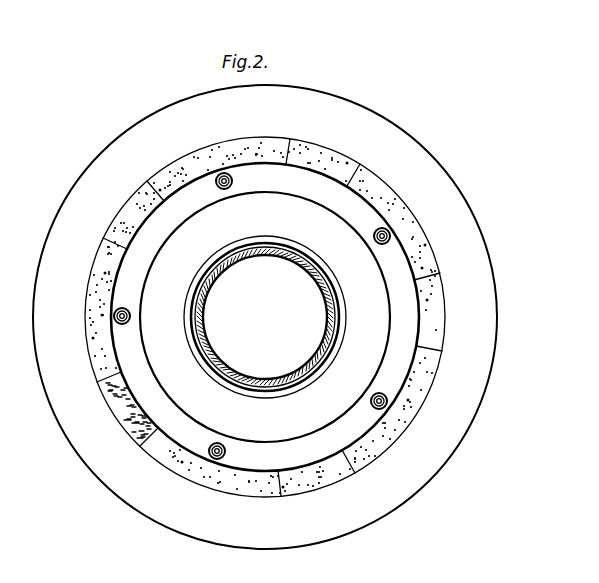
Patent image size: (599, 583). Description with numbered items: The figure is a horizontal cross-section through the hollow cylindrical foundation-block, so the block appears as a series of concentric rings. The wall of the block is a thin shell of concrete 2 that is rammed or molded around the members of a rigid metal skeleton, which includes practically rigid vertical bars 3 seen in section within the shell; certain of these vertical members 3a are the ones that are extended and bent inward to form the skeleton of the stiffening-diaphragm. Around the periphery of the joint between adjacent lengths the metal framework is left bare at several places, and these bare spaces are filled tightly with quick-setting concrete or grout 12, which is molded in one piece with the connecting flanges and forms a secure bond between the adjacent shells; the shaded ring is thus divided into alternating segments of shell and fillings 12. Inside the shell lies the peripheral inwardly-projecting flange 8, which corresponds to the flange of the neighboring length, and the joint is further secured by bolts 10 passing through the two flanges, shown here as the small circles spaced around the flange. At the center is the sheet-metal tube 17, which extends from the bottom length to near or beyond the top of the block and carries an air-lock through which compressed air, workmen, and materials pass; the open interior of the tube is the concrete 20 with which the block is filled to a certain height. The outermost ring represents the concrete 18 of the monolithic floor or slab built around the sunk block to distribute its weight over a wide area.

The thin shell of concrete 2 is at (98, 381).
The vertical bars 3 is at (93, 338).
The vertical members 3a is at (446, 268).
The flange 8 is at (305, 195).
The bolts 10 is at (224, 190).
The concrete fillings 12 is at (120, 210).
The sheet-metal tube 17 is at (198, 335).
The concrete layers 18 is at (480, 253).
The concrete filling 20 is at (265, 317).